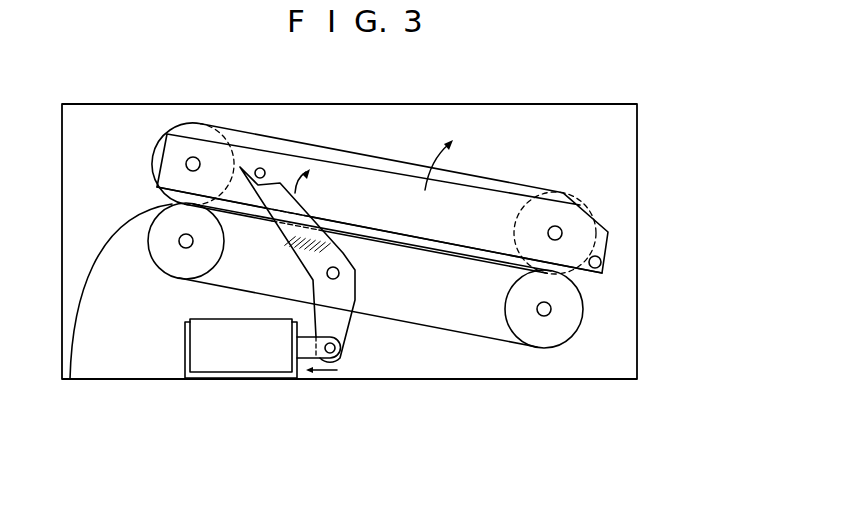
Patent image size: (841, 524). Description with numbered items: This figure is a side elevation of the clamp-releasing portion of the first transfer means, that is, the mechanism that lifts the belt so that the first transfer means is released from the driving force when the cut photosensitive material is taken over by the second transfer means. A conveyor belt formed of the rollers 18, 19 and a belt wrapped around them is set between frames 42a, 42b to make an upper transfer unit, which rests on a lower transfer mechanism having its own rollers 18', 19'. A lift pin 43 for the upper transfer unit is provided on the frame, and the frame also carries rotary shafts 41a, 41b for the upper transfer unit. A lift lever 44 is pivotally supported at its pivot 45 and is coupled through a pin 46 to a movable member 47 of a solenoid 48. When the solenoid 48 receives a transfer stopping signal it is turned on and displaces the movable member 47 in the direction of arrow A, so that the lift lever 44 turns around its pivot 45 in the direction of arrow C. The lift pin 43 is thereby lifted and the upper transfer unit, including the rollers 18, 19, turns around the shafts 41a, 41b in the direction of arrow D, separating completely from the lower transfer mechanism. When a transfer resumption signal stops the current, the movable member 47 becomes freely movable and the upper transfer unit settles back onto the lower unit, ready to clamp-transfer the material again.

The roller 18 is at (594, 219).
The lower drive roller 18' is at (544, 345).
The roller 19 is at (193, 135).
The lower roller 19' is at (181, 259).
The rotary shaft 41a is at (601, 262).
The rotary shaft 41b is at (658, 255).
The frame 42a is at (607, 231).
The frame 42b is at (442, 199).
The lift pin 43 is at (261, 168).
The lift lever 44 is at (335, 251).
The pivot 45 is at (340, 277).
The connecting pin 46 is at (346, 360).
The movable member 47 is at (302, 357).
The solenoid 48 is at (238, 368).
The arrow A is at (330, 372).
The arrow C is at (300, 190).
The arrow D is at (442, 155).